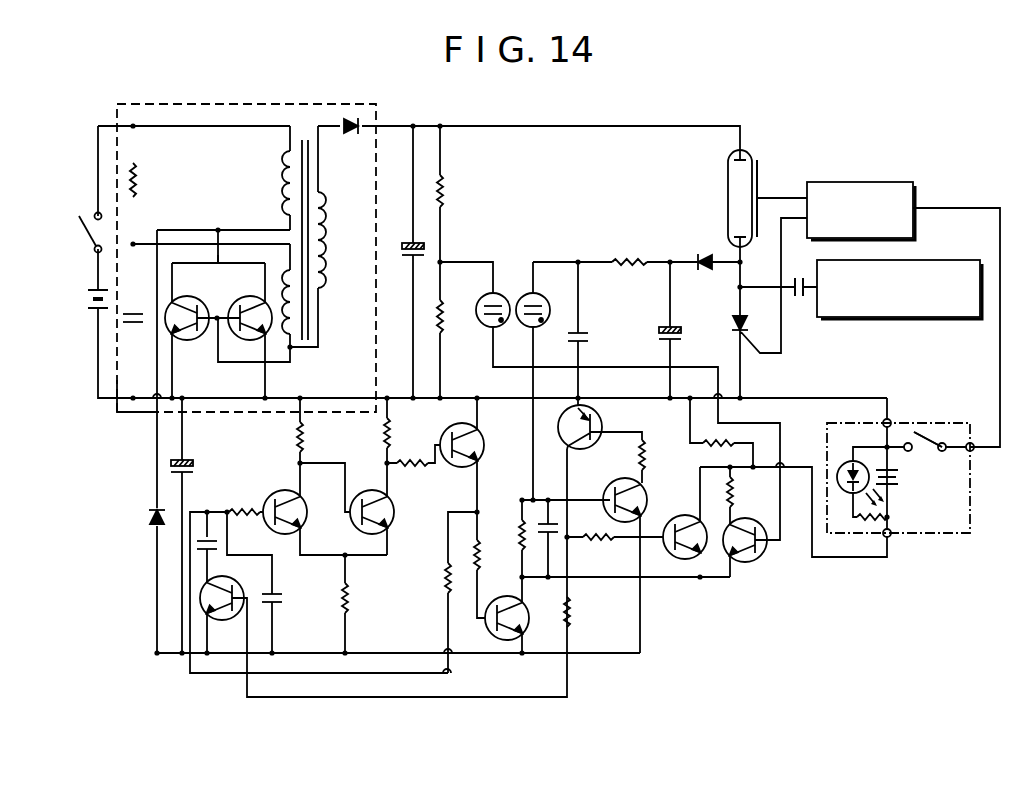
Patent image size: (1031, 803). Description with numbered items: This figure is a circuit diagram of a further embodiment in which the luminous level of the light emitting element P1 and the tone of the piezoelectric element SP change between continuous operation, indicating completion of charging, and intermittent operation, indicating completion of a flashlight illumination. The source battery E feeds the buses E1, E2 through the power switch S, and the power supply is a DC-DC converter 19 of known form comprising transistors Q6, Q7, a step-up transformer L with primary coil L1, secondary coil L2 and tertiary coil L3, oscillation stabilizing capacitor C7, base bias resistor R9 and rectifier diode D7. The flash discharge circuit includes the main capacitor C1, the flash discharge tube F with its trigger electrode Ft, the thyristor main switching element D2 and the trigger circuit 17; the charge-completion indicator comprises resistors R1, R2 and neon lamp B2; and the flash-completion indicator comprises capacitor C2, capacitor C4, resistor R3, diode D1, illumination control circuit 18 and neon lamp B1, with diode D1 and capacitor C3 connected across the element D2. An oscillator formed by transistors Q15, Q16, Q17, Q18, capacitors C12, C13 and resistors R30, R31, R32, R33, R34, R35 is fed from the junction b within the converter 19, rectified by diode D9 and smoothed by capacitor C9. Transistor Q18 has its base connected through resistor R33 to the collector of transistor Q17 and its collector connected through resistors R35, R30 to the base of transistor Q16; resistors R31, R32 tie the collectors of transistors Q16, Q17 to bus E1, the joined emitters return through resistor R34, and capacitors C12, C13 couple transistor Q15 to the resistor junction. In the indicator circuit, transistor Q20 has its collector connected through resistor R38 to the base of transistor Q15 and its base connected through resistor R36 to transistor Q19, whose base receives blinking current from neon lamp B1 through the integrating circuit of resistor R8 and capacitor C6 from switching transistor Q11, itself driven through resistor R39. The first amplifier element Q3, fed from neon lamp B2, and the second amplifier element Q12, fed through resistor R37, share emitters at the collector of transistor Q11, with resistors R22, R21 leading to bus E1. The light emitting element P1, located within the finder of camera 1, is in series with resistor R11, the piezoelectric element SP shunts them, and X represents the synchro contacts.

The DC-DC converter 19 is at (253, 104).
The bus E2 is at (206, 126).
The bus E1 is at (117, 405).
The step-up transformer L is at (306, 138).
The tertiary coil L3 is at (282, 191).
The secondary coil L2 is at (328, 196).
The primary coil L1 is at (293, 345).
The rectifier diode D7 is at (352, 133).
The base bias resistor R9 is at (139, 189).
The power switch S is at (88, 243).
The source battery E is at (89, 298).
The oscillation stabilizing capacitor C7 is at (122, 318).
The junction b is at (218, 264).
The transistor Q6 is at (190, 341).
The transistor Q7 is at (246, 297).
The main capacitor C1 is at (408, 256).
The resistor R1 is at (444, 192).
The resistor R2 is at (443, 319).
The neon lamp B2 is at (481, 299).
The neon lamp B1 is at (542, 298).
The capacitor C2 is at (591, 323).
The capacitor C3 is at (663, 330).
The resistor R3 is at (630, 258).
The diode D1 is at (702, 255).
The main switching element D2 is at (732, 323).
The flash discharge tube F is at (728, 197).
The trigger electrode Ft is at (768, 164).
The trigger circuit 17 is at (878, 182).
The illumination control circuit 18 is at (896, 318).
The capacitor C4 is at (800, 297).
The capacitor C9 is at (193, 468).
The diode D9 is at (150, 522).
The resistor R31 is at (304, 437).
The resistor R30 is at (249, 498).
The transistor Q16 is at (306, 508).
The transistor Q17 is at (395, 512).
The capacitor C12 is at (218, 548).
The transistor Q15 is at (218, 619).
The resistor R34 is at (339, 595).
The capacitor C13 is at (283, 604).
The resistor R32 is at (411, 435).
The resistor R33 is at (414, 469).
The transistor Q18 is at (484, 441).
The resistor R35 is at (443, 585).
The resistor R39 is at (479, 568).
The resistor R8 is at (515, 530).
The capacitor C6 is at (542, 540).
The switching transistor Q11 is at (527, 624).
The resistor R38 is at (573, 620).
The transistor Q20 is at (606, 412).
The resistor R36 is at (637, 455).
The transistor Q19 is at (606, 492).
The resistor R37 is at (605, 554).
The second amplifier element Q12 is at (675, 546).
The resistor R21 is at (702, 454).
The resistor R22 is at (735, 500).
The first amplifier element Q3 is at (756, 552).
The camera 1 is at (914, 534).
The light emitting element P1 is at (846, 492).
The piezoelectric element SP is at (898, 480).
The resistor R11 is at (889, 518).
The synchro contacts X is at (928, 449).